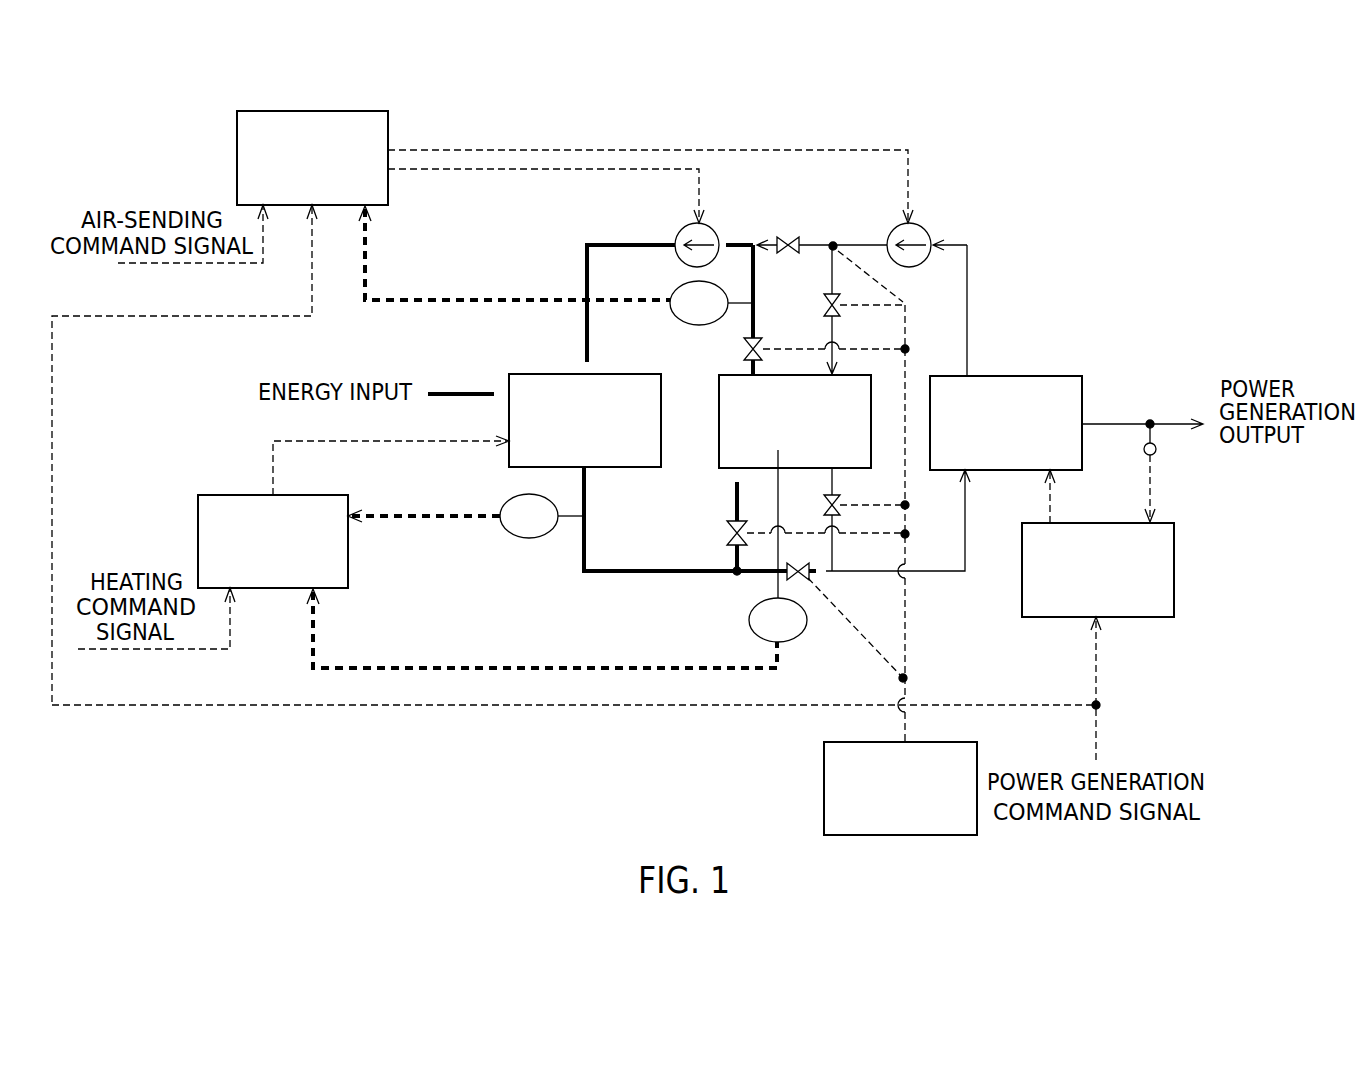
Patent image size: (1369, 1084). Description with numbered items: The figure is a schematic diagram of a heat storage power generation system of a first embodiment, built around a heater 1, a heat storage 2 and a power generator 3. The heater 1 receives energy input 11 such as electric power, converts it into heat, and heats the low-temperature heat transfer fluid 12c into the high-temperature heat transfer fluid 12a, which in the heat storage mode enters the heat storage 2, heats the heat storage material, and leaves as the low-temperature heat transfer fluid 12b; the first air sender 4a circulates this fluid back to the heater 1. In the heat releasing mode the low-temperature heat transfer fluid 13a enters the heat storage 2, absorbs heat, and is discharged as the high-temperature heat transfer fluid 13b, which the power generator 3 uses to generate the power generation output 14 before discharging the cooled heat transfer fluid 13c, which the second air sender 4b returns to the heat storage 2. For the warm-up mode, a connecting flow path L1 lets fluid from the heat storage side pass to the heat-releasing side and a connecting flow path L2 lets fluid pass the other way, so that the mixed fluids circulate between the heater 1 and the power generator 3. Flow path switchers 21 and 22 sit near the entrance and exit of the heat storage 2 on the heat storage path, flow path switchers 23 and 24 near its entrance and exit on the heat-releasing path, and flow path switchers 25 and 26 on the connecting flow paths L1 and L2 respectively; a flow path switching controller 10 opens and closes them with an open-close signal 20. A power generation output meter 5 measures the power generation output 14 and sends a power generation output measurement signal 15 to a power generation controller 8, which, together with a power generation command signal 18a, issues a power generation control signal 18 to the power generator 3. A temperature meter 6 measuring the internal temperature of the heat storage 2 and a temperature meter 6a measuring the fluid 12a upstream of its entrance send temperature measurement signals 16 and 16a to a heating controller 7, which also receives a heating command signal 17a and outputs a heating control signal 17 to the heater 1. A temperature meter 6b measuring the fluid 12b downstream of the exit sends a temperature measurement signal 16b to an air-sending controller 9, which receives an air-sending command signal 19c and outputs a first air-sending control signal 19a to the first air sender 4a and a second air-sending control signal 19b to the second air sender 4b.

The heater 1 is at (508, 462).
The heat storage 2 is at (718, 465).
The power generator 3 is at (1045, 375).
The first air sender 4a is at (712, 229).
The second air sender 4b is at (925, 230).
The power generation output meter 5 is at (1157, 449).
The temperature meter 6 is at (750, 625).
The temperature meter 6a is at (530, 540).
The temperature meter 6b is at (684, 318).
The heating controller 7 is at (233, 494).
The power generation controller 8 is at (1175, 570).
The air-sending controller 9 is at (237, 152).
The flow path switching controller 10 is at (824, 787).
The energy input 11 is at (460, 393).
The heat transfer fluid 12a is at (633, 574).
The heat transfer fluid 12b is at (757, 272).
The heat transfer fluid 12c is at (586, 275).
The heat transfer fluid 13a is at (831, 287).
The heat transfer fluid 13b is at (940, 574).
The heat transfer fluid 13c is at (968, 300).
The power generation output 14 is at (1112, 422).
The power generation output measurement signal 15 is at (1152, 478).
The temperature measurement signal 16 is at (528, 668).
The temperature measurement signal 16a is at (435, 520).
The temperature measurement signal 16b is at (460, 298).
The heating control signal 17 is at (375, 444).
The heating command signal 17a is at (185, 652).
The power generation control signal 18 is at (1052, 500).
The power generation command signal 18a is at (1098, 672).
The first air-sending control signal 19a is at (533, 172).
The second air-sending control signal 19b is at (535, 150).
The air-sending command signal 19c is at (190, 265).
The open-close signal 20 is at (907, 660).
The flow path switcher 21 is at (727, 533).
The flow path switcher 22 is at (744, 349).
The flow path switcher 23 is at (843, 307).
The flow path switcher 24 is at (840, 498).
The flow path switcher 25 is at (808, 570).
The flow path switcher 26 is at (788, 236).
The connecting flow path L1 is at (771, 576).
The connecting flow path L2 is at (833, 242).